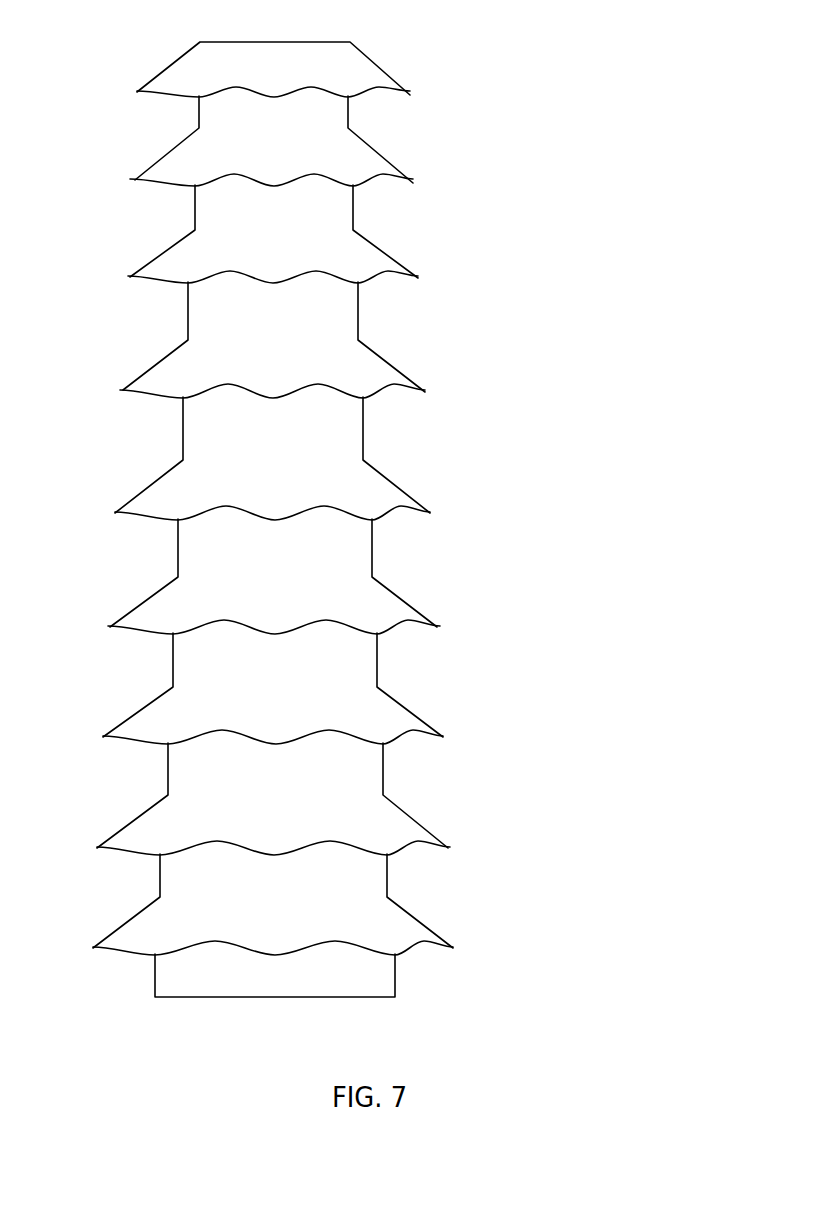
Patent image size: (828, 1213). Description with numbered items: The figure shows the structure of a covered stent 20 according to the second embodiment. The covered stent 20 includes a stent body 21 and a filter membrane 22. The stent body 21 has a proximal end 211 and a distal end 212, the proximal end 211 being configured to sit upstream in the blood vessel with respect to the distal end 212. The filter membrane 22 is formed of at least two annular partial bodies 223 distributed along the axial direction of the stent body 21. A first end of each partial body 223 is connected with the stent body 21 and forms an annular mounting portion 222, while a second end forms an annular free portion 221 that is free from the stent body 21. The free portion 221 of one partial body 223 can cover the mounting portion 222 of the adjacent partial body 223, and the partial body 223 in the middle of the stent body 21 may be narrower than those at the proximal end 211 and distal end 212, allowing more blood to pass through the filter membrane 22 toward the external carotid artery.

The covered stent 20 is at (503, 655).
The stent body 21 is at (363, 427).
The filter membrane 22 is at (347, 603).
The proximal end 211 is at (370, 968).
The distal end 212 is at (333, 70).
The free portion 221 is at (372, 262).
The mounting portion 222 is at (338, 212).
The partial body 223 is at (280, 340).